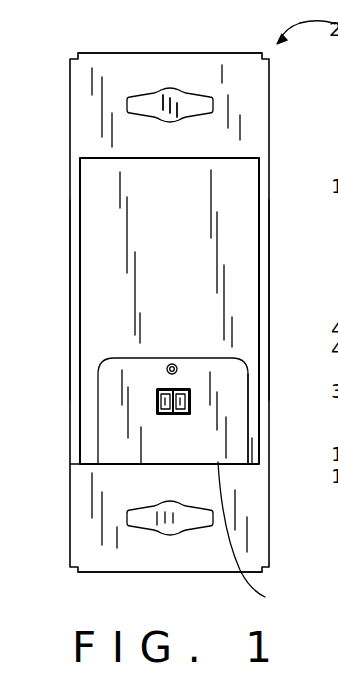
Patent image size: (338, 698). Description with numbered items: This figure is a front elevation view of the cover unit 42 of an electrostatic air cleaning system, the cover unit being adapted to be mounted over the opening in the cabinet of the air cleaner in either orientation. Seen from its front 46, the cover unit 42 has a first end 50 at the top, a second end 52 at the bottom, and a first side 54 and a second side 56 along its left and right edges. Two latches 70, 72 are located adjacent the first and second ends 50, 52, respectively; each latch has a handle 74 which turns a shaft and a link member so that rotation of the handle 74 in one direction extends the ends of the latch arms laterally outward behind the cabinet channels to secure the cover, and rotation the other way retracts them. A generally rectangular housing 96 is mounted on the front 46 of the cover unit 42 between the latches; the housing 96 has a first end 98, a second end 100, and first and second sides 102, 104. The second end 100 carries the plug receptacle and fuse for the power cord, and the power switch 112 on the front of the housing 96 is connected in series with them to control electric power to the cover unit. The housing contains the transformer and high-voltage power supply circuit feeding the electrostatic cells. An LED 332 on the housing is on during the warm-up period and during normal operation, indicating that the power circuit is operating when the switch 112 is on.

The cover unit 42 is at (248, 489).
The front 46 is at (96, 480).
The first end 50 is at (133, 42).
The second end 52 is at (122, 582).
The first side 54 is at (62, 293).
The second side 56 is at (280, 258).
The latch 70 is at (198, 126).
The latch 72 is at (189, 544).
The handle 74 is at (200, 103).
The housing 96 is at (103, 332).
The first end 98 is at (102, 158).
The second end 100 is at (262, 536).
The first side 102 is at (80, 397).
The second side 104 is at (260, 355).
The power switch 112 is at (172, 415).
The LED 332 is at (170, 363).